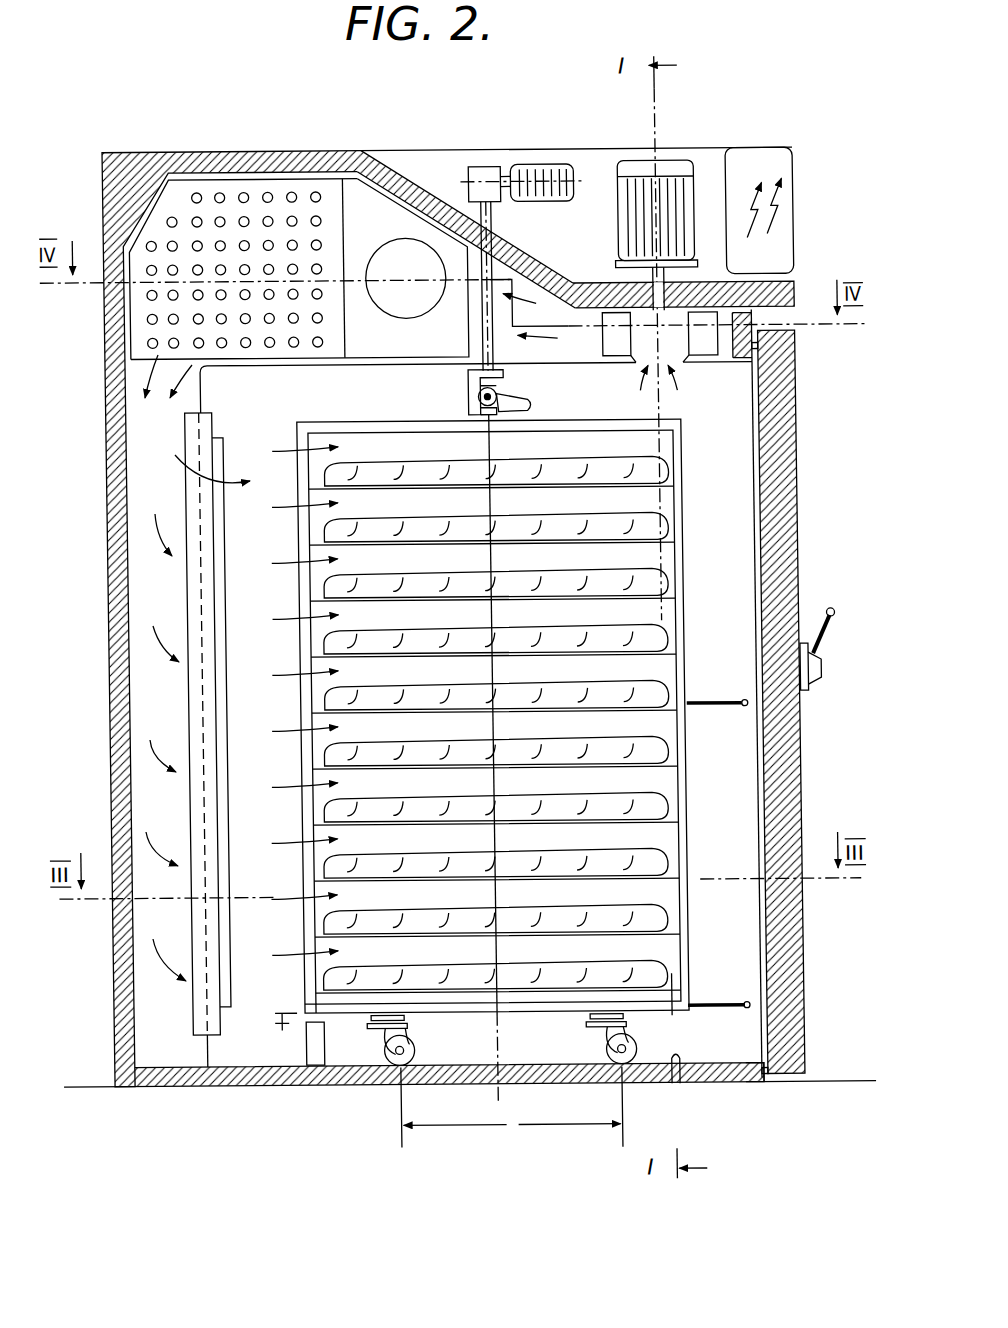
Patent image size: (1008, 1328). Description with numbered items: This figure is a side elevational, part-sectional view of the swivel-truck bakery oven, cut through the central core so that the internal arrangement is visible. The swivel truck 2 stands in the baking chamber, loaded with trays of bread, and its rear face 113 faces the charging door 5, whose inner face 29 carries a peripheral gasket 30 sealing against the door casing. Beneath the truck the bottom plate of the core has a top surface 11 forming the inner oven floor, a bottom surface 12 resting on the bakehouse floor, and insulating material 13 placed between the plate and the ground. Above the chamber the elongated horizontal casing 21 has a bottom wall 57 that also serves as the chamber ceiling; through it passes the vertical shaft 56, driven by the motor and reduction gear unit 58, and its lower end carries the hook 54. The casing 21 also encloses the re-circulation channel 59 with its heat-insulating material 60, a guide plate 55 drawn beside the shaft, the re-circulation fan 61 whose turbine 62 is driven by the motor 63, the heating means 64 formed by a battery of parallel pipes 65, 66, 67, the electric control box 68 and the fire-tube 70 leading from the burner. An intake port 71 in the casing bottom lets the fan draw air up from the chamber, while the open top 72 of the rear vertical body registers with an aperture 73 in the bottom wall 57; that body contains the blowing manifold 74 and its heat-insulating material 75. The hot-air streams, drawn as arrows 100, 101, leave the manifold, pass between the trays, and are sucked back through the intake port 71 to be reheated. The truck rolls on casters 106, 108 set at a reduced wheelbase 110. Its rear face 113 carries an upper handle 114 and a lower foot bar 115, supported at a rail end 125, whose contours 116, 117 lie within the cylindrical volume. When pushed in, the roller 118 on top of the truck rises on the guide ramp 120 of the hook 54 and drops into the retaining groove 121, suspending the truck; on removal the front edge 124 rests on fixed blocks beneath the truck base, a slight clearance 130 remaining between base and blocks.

The swivel truck 2 is at (688, 505).
The charging door 5 is at (785, 532).
The top surface 11 is at (707, 1082).
The bottom surface 12 is at (675, 1090).
The insulating material 13 is at (745, 1080).
The horizontal casing 21 is at (598, 165).
The inner face 29 is at (752, 773).
The peripheral gasket 30 is at (763, 1080).
The hook 54 is at (477, 388).
The guide plate 55 is at (557, 310).
The vertical shaft 56 is at (456, 228).
The bottom wall 57 is at (361, 357).
The motor and reduction gear unit 58 is at (537, 167).
The re-circulation channel 59 is at (495, 361).
The heat-insulating material 60 is at (414, 175).
The re-circulation fan 61 is at (710, 280).
The turbine 62 is at (735, 316).
The motor 63 is at (672, 203).
The heating means 64 is at (258, 205).
The pipe 65 is at (172, 222).
The pipe 66 is at (196, 197).
The pipe 67 is at (220, 197).
The electric control box 68 is at (783, 165).
The fire-tube 70 is at (392, 238).
The intake port 71 is at (690, 340).
The top 72 is at (160, 367).
The aperture 73 is at (173, 347).
The manifold 74 is at (143, 470).
The heat-insulating material 75 is at (110, 510).
The arrow 100 is at (150, 632).
The arrow 101 is at (148, 748).
The caster 106 is at (382, 1037).
The caster 108 is at (628, 1036).
The wheelbase 110 is at (512, 1107).
The rear face 113 is at (683, 578).
The handle 114 is at (720, 700).
The bar 115 is at (715, 1001).
The contour 116 is at (746, 708).
The contour 117 is at (748, 1000).
The roller 118 is at (477, 397).
The guide ramp 120 is at (503, 398).
The retaining groove 121 is at (490, 400).
The front edge 124 is at (300, 1013).
The rail support 125 is at (700, 1000).
The clearance 130 is at (297, 1022).